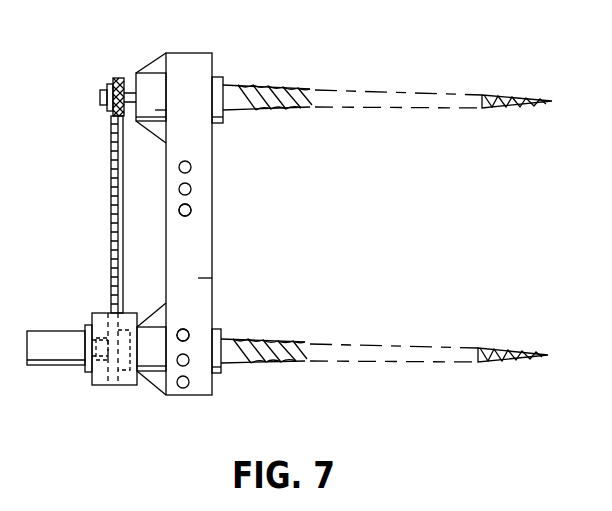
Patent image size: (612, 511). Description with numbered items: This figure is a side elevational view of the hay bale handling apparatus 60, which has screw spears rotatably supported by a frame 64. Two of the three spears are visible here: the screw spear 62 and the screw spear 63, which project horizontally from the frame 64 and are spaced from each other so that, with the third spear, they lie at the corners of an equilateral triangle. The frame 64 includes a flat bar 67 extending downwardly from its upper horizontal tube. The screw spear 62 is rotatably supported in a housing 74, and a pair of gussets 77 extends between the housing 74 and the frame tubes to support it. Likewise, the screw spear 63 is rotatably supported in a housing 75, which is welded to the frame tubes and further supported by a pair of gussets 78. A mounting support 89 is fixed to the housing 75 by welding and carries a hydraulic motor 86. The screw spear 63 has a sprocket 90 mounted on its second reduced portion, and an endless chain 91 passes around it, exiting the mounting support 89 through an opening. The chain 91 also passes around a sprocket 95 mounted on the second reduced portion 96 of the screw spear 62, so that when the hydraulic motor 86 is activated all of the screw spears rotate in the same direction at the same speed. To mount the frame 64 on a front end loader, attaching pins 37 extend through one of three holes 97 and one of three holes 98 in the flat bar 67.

The hay bale handling apparatus 60 is at (474, 75).
The screw spear 62 is at (289, 90).
The screw spear 63 is at (287, 344).
The frame 64 is at (212, 254).
The flat bar 67 is at (200, 278).
The housing 74 is at (218, 123).
The housing 75 is at (218, 329).
The gussets 77 is at (152, 72).
The gussets 78 is at (157, 322).
The attaching pins 37 is at (191, 189).
The hydraulic motor 86 is at (68, 330).
The mounting support 89 is at (112, 386).
The sprocket 90 is at (108, 372).
The endless chain 91 is at (110, 256).
The sprocket 95 is at (116, 78).
The second reduced portion 96 is at (100, 95).
The holes 97 is at (185, 331).
The holes 98 is at (189, 214).